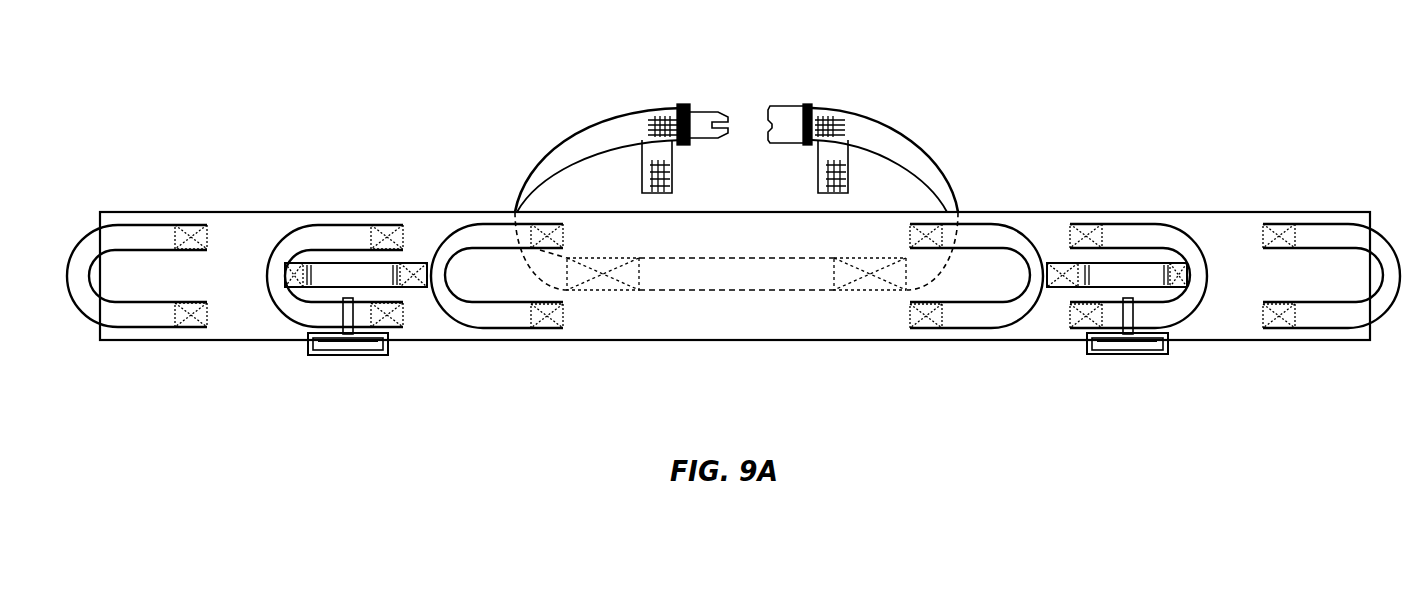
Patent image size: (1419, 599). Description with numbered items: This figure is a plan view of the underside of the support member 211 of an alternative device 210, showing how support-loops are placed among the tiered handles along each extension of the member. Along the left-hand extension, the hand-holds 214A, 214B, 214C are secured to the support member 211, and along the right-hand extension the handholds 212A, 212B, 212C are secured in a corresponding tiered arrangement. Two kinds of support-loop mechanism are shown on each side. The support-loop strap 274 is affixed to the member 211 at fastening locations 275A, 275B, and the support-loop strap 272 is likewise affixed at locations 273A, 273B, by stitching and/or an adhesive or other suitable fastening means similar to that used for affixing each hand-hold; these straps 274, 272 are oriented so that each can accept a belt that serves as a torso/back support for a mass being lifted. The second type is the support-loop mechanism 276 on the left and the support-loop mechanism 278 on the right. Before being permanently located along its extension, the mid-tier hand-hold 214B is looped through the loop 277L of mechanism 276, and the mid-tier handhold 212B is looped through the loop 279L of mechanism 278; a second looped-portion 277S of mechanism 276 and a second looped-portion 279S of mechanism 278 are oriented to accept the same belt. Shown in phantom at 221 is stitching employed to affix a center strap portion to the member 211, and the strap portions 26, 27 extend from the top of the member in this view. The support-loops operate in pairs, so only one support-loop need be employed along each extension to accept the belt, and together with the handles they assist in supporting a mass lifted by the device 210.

The alternative device 210 is at (735, 183).
The support member 211 is at (737, 212).
The strap with male buckle 26 is at (636, 106).
The strap with female buckle 27 is at (870, 112).
The hand-hold 214A is at (120, 233).
The hand-hold 214B is at (287, 240).
The hand-hold 214C is at (500, 318).
The handhold 212A is at (1331, 232).
The handhold 212B is at (1165, 235).
The handhold 212C is at (1000, 235).
The support-loop strap 274 is at (336, 274).
The fastening location 275A is at (410, 290).
The fastening location 275B is at (293, 290).
The support-loop strap 272 is at (1150, 268).
The fastening location 273A is at (1055, 292).
The fastening location 273B is at (1188, 292).
The stitching 221 is at (620, 292).
The support-loop mechanism 276 is at (348, 375).
The loop 277L is at (350, 310).
The looped-portion 277S is at (340, 352).
The support-loop mechanism 278 is at (1154, 381).
The loop 279L is at (1127, 312).
The looped-portion 279S is at (1130, 355).